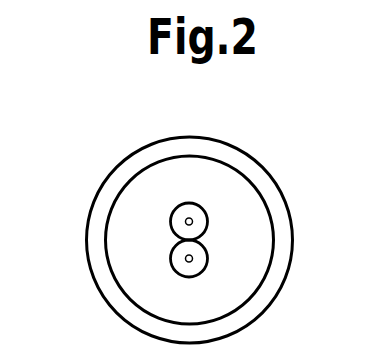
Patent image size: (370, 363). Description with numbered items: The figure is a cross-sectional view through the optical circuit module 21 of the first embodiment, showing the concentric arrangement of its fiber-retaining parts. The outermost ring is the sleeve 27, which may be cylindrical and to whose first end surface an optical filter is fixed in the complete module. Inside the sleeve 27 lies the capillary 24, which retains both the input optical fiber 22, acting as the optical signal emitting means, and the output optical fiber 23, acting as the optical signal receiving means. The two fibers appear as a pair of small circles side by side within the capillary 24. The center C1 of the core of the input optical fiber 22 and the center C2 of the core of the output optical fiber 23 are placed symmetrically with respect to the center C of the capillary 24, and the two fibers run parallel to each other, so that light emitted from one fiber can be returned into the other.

The optical circuit module 21 is at (113, 153).
The input optical fiber 22 is at (175, 209).
The output optical fiber 23 is at (171, 259).
The capillary 24 is at (243, 277).
The sleeve 27 is at (102, 197).
The center of the capillary C is at (191, 236).
The center of the core of the input optical fiber C1 is at (190, 218).
The center of the core of the output optical fiber C2 is at (187, 261).